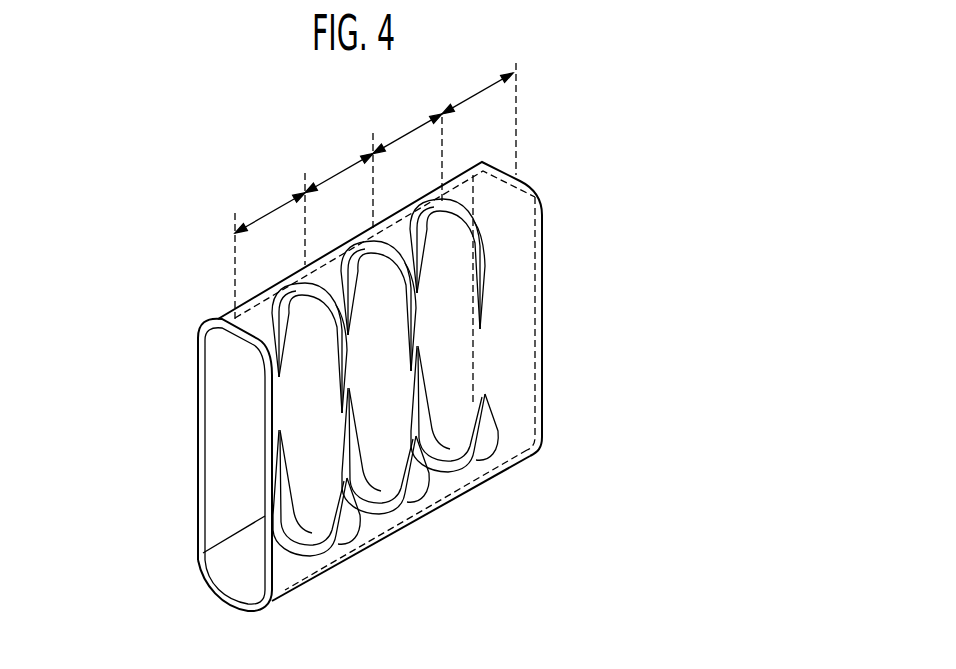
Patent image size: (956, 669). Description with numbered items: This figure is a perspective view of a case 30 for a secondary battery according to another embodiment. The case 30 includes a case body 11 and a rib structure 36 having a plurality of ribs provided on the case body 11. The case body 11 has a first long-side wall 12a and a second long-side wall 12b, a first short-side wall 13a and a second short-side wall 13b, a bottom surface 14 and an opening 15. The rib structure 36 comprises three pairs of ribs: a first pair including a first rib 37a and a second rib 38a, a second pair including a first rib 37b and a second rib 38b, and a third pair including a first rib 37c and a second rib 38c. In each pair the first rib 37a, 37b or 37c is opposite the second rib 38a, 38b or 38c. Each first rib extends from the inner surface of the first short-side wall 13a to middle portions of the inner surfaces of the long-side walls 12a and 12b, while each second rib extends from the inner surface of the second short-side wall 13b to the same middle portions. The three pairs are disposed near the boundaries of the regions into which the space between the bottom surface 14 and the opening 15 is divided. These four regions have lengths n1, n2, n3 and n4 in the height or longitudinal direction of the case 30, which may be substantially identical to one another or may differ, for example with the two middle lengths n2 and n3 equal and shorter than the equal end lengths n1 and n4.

The case for secondary battery 30 is at (149, 214).
The case body 11 is at (545, 186).
The bottom surface 14 is at (545, 331).
The opening 15 is at (233, 426).
The first long-side wall 12a is at (200, 503).
The second long-side wall 12b is at (272, 603).
The first short-side wall 13a is at (233, 303).
The second short-side wall 13b is at (222, 600).
The rib structure 36 is at (493, 483).
The 1A-th rib 37a is at (290, 296).
The 1B-th rib 37b is at (365, 247).
The 1C-th rib 37c is at (435, 207).
The 2A-th rib 38a is at (305, 556).
The 2B-th rib 38b is at (370, 514).
The 2C-th rib 38c is at (440, 470).
The length of first region n1 is at (270, 251).
The length of second region n2 is at (339, 203).
The length of third region n3 is at (407, 164).
The length of fourth region n4 is at (479, 132).